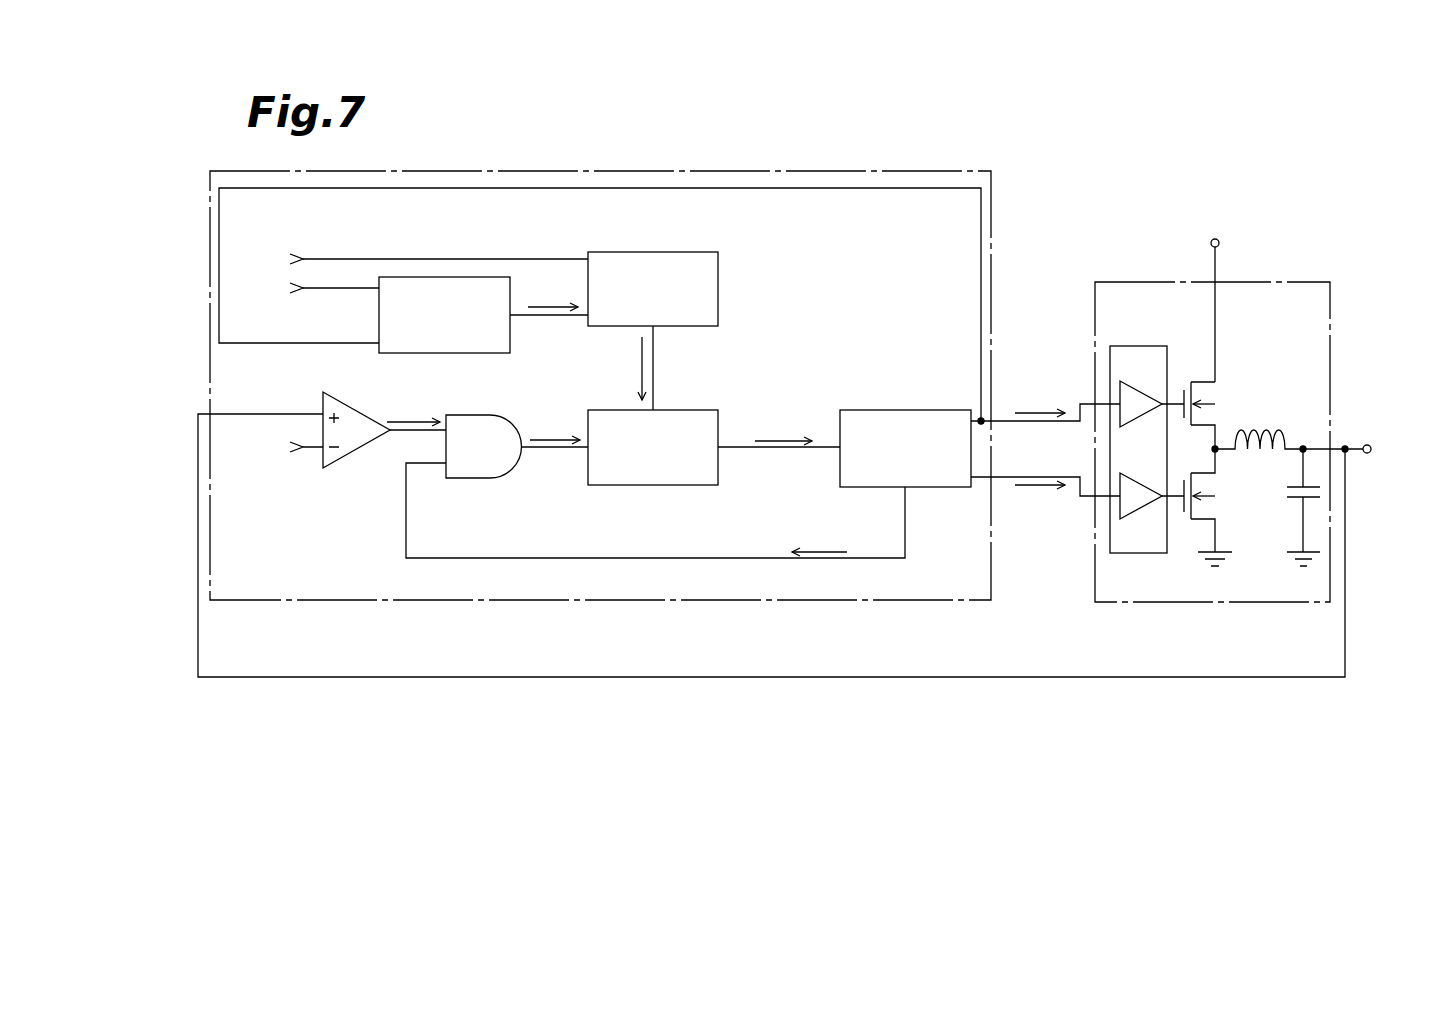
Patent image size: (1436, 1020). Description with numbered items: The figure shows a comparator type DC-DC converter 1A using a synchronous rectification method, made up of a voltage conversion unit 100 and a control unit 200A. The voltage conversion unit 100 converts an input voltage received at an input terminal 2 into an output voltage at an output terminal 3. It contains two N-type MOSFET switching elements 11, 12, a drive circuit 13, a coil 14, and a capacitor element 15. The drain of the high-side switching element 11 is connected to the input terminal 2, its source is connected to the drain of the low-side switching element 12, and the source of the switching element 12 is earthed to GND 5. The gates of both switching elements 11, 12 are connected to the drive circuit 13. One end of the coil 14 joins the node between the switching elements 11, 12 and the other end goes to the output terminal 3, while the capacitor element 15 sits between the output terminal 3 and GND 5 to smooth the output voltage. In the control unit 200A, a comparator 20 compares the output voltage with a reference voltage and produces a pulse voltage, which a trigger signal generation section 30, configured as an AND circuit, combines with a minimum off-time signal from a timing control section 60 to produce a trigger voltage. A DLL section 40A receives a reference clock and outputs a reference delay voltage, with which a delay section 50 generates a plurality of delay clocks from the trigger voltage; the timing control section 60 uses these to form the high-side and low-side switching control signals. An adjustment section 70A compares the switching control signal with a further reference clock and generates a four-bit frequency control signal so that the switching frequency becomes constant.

The DC-DC converter 1A is at (1333, 140).
The control unit 200A is at (963, 171).
The voltage conversion unit 100 is at (1300, 282).
The input terminal 2 is at (1211, 243).
The output terminal 3 is at (1368, 454).
The GND 5 is at (1219, 552).
The switching element 11 is at (1186, 392).
The switching element 12 is at (1185, 510).
The drive circuit 13 is at (1148, 345).
The coil 14 is at (1266, 428).
The capacitor element 15 is at (1288, 499).
The comparator 20 is at (346, 402).
The trigger signal generation section 30 is at (484, 413).
The DLL section 40A is at (692, 252).
The delay section 50 is at (693, 410).
The timing control section 60 is at (940, 410).
The adjustment section 70A is at (379, 318).